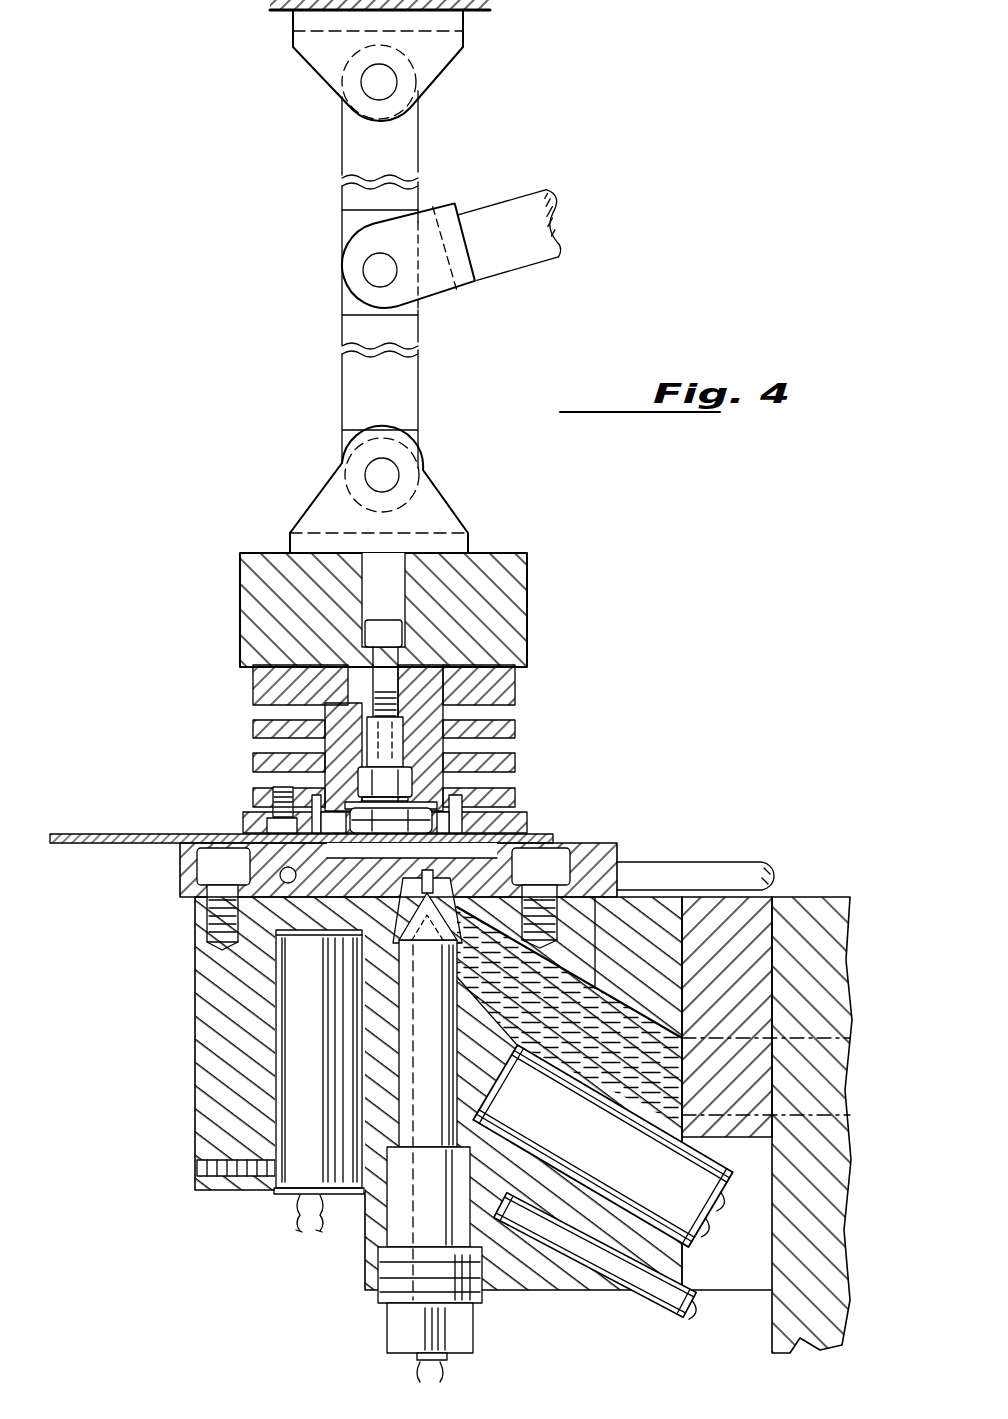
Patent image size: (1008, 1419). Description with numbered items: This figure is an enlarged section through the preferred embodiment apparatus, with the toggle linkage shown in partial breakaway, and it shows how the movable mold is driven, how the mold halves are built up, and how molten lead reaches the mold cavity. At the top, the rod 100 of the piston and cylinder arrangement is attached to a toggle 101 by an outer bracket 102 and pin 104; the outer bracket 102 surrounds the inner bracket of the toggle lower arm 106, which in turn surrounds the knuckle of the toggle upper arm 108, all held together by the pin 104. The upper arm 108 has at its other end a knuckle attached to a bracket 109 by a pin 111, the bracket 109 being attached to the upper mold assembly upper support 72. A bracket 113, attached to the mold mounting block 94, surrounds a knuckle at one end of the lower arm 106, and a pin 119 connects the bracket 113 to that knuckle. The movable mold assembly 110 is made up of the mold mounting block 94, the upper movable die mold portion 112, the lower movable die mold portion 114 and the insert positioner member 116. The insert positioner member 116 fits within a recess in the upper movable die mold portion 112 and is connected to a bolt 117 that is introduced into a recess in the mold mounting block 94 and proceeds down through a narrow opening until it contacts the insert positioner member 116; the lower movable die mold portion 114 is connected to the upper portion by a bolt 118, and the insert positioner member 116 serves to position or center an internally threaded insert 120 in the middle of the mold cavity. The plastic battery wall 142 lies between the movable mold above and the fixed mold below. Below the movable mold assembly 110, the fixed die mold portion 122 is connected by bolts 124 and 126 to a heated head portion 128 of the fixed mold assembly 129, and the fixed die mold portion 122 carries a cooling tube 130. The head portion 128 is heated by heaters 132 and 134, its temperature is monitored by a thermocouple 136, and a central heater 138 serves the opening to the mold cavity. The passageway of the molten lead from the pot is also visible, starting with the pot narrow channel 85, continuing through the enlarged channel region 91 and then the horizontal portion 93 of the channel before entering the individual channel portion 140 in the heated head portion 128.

The upper mold assembly upper support 72 is at (282, 5).
The bracket 109 is at (440, 52).
The pin 111 is at (378, 82).
The toggle upper arm 108 is at (400, 135).
The rod 100 is at (548, 226).
The outer bracket 102 is at (472, 283).
The pin 104 is at (375, 271).
The toggle lower arm 106 is at (405, 392).
The toggle 101 is at (332, 351).
The bracket 113 is at (430, 510).
The pin 119 is at (380, 476).
The mold mounting block 94 is at (505, 606).
The bolt 117 is at (372, 680).
The upper movable die mold portion 112 is at (432, 751).
The movable mold assembly 110 is at (540, 685).
The lower movable die mold portion 114 is at (505, 824).
The insert positioner member 116 is at (365, 782).
The bolt 118 is at (274, 802).
The internally threaded insert 120 is at (463, 810).
The plastic battery wall 142 is at (126, 834).
The bolt 126 is at (552, 866).
The bolt 124 is at (212, 874).
The fixed die mold portion 122 is at (195, 900).
The cooling tube 130 is at (723, 870).
The heated head portion 128 is at (225, 1094).
The fixed mold assembly 129 is at (183, 972).
The channel portion 140 is at (640, 1013).
The enlarged channel region 91 is at (757, 1078).
The pot narrow channel 85 is at (835, 1100).
The horizontal portion of the channel 93 is at (645, 1082).
The heater 132 is at (300, 1110).
The central heater 138 is at (420, 1182).
The heater 134 is at (705, 1192).
The thermocouple 136 is at (630, 1265).